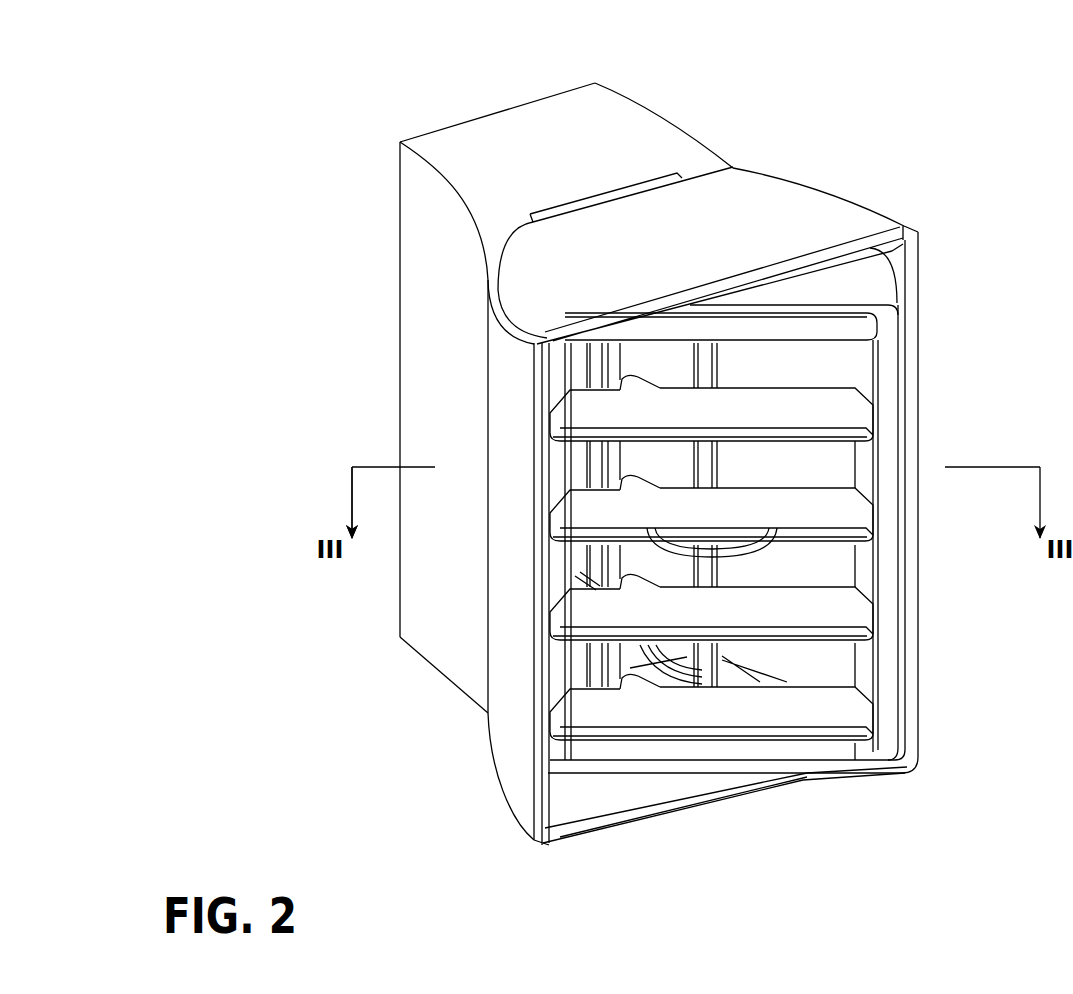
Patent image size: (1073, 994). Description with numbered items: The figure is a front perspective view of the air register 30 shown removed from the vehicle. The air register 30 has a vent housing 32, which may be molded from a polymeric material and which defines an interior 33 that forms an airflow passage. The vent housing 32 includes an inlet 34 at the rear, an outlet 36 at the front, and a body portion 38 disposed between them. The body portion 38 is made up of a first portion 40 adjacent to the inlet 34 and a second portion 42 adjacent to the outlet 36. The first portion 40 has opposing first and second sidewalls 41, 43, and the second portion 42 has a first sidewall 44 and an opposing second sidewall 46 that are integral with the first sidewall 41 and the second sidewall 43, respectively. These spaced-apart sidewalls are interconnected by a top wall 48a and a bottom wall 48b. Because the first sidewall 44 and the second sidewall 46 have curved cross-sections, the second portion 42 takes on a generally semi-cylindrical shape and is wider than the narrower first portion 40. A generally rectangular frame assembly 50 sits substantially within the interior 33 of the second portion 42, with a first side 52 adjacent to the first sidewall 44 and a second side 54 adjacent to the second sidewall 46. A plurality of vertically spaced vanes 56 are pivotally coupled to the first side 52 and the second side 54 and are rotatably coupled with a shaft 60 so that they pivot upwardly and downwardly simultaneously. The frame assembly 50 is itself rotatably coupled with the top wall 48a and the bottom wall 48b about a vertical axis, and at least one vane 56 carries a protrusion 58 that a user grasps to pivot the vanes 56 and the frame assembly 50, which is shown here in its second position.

The air register 30 is at (848, 88).
The vent housing 32 is at (752, 158).
The interior 33 is at (798, 376).
The inlet 34 is at (470, 117).
The outlet 36 is at (815, 461).
The body portion 38 is at (392, 579).
The first portion 40 is at (433, 388).
The first sidewall 41 is at (432, 330).
The second portion 42 is at (519, 769).
The second sidewall 43 is at (663, 133).
The first sidewall 44 is at (510, 652).
The second sidewall 46 is at (900, 212).
The top wall 48a is at (810, 200).
The bottom wall 48b is at (650, 822).
The frame assembly 50 is at (852, 284).
The first side 52 is at (557, 567).
The second side 54 is at (862, 550).
The vane 56 is at (827, 407).
The protrusion 58 is at (736, 553).
The shaft 60 is at (610, 663).